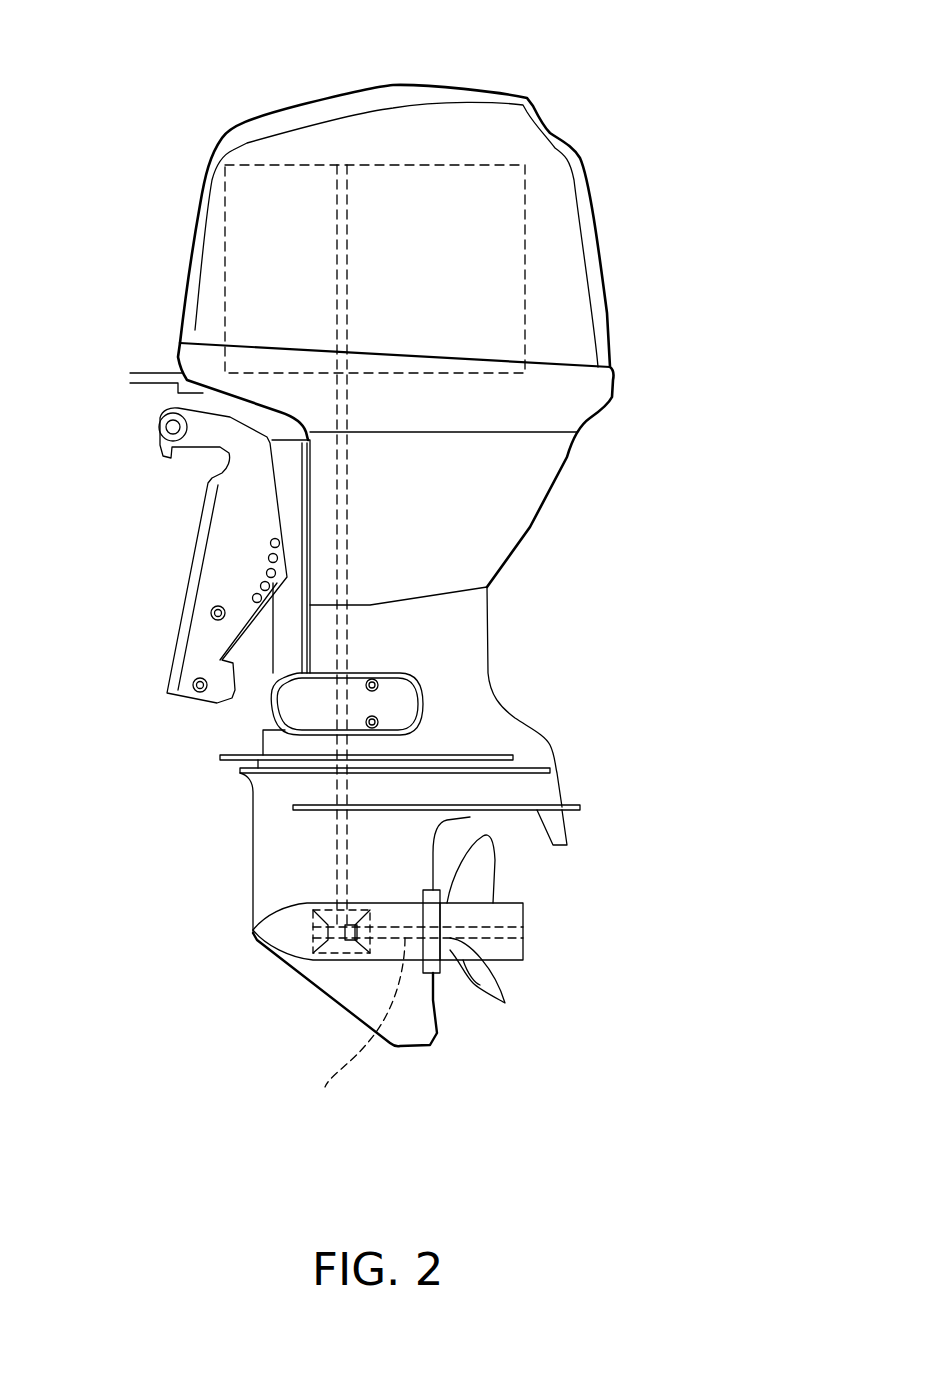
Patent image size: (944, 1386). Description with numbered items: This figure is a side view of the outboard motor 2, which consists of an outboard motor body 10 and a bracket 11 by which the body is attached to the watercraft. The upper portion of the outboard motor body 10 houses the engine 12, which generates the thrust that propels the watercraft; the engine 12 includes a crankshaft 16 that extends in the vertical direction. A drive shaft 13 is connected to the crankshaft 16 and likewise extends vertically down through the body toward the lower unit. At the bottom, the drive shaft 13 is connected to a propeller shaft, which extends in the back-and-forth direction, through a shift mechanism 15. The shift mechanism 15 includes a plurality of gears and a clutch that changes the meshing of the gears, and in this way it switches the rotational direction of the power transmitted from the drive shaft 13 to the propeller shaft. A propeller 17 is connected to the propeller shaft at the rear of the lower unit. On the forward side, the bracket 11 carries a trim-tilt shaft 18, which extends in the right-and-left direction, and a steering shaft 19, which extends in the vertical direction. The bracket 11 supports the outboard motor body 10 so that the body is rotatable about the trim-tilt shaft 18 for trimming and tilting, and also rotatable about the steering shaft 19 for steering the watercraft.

The outboard motor 2 is at (190, 88).
The outboard motor body 10 is at (617, 432).
The bracket 11 is at (190, 520).
The engine 12 is at (223, 230).
The drive shaft 13 is at (347, 542).
The shift mechanism 15 is at (310, 955).
The crankshaft 16 is at (337, 300).
The propeller 17 is at (470, 963).
The trim-tilt shaft 18 is at (159, 427).
The steering shaft 19 is at (285, 625).